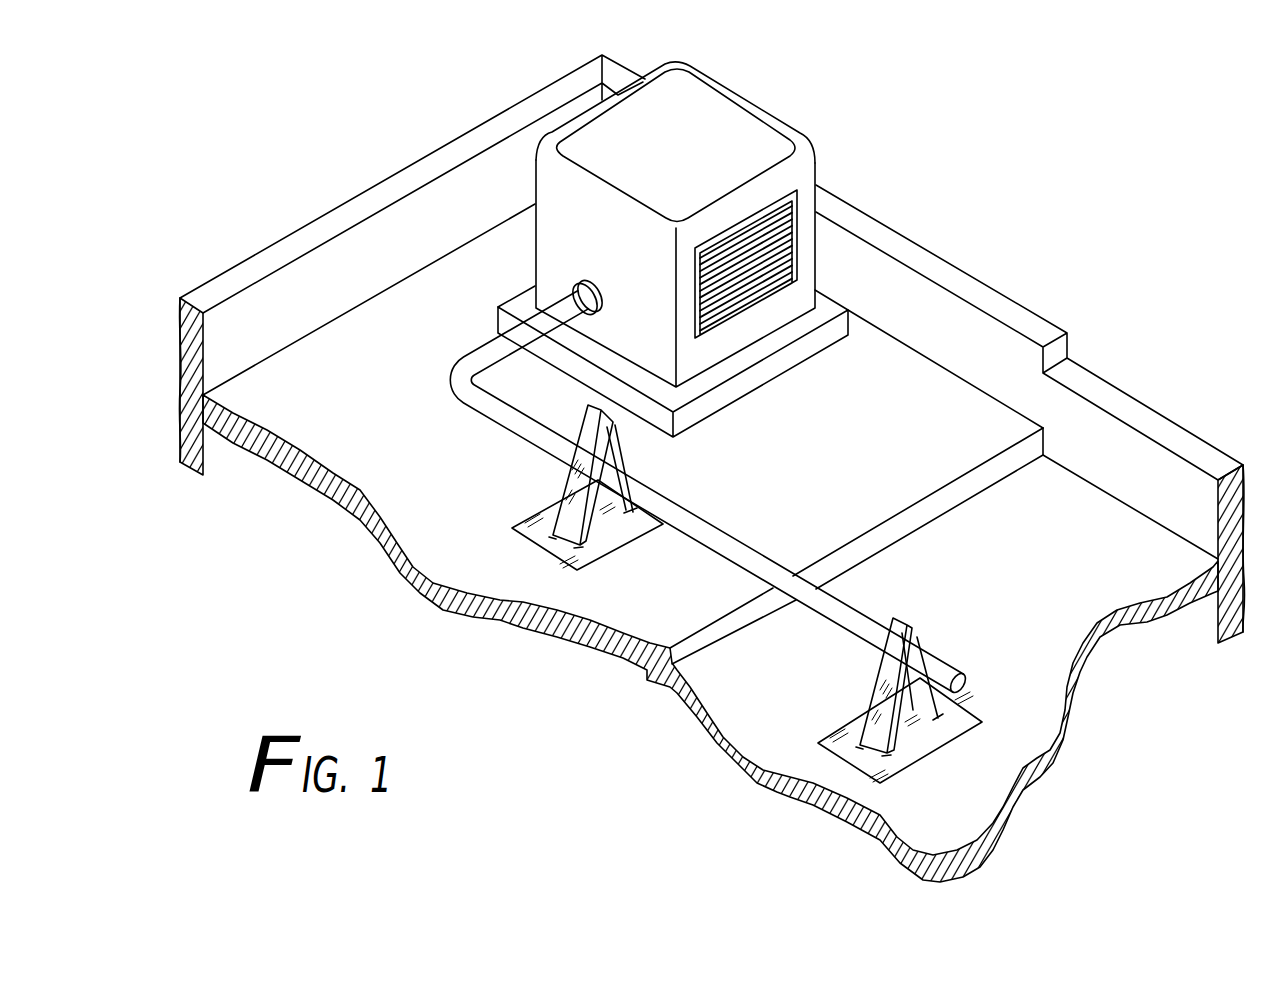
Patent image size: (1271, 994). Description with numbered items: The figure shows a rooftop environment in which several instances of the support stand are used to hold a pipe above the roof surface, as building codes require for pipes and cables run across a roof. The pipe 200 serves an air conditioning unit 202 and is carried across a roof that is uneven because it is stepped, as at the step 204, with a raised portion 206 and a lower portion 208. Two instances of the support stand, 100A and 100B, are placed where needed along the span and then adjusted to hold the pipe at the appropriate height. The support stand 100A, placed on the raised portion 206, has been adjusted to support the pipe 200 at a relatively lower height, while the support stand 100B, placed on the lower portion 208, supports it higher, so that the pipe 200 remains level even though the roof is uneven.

The support stand 100A is at (556, 560).
The support stand 100B is at (838, 758).
The pipe 200 is at (500, 436).
The air conditioning unit 202 is at (773, 112).
The step 204 is at (687, 660).
The raised portion 206 is at (312, 408).
The lower portion 208 is at (1042, 640).